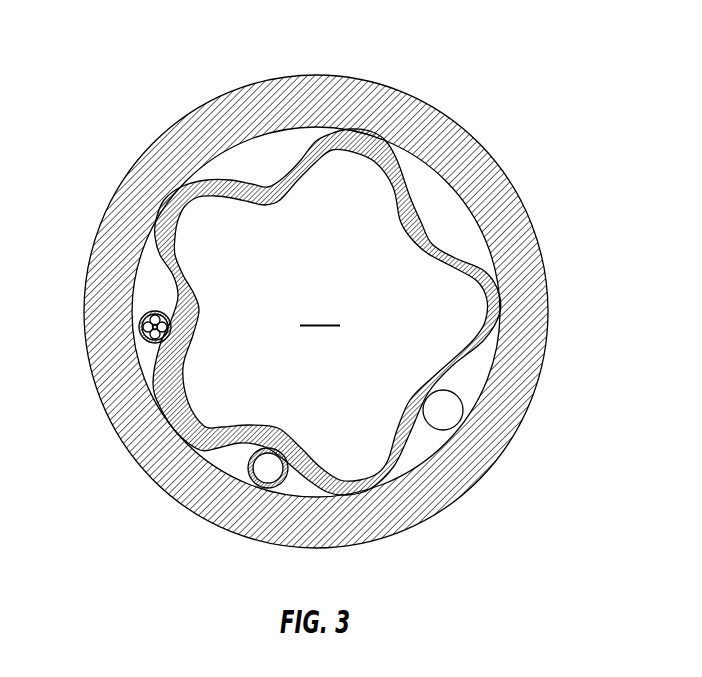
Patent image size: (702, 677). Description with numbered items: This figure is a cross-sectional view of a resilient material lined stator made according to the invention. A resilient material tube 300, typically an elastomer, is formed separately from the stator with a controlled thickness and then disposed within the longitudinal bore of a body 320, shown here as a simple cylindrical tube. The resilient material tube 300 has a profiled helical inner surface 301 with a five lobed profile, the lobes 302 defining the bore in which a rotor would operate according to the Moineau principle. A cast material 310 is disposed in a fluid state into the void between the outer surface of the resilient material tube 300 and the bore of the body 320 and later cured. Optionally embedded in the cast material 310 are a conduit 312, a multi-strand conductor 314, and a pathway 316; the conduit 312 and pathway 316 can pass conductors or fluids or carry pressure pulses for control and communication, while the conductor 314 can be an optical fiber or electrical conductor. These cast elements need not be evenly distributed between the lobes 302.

The resilient material tube 300 is at (375, 140).
The profiled helical inner surface 301 is at (320, 314).
The lobes 302 is at (148, 428).
The cast material 310 is at (268, 157).
The conduit 312 is at (267, 488).
The conductor 314 is at (139, 326).
The pathway 316 is at (443, 430).
The body 320 is at (140, 193).